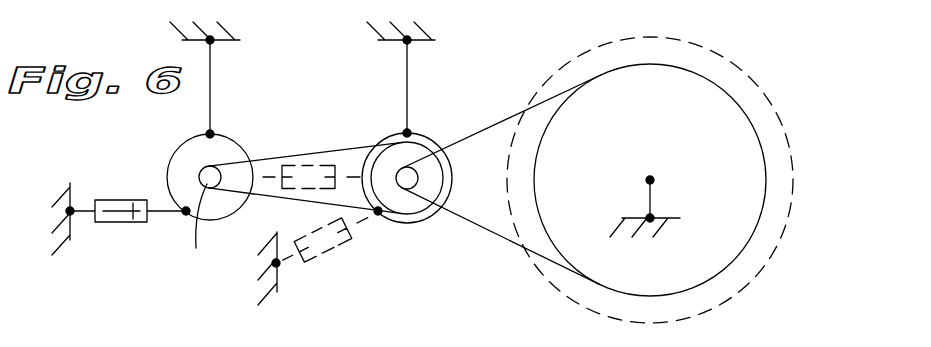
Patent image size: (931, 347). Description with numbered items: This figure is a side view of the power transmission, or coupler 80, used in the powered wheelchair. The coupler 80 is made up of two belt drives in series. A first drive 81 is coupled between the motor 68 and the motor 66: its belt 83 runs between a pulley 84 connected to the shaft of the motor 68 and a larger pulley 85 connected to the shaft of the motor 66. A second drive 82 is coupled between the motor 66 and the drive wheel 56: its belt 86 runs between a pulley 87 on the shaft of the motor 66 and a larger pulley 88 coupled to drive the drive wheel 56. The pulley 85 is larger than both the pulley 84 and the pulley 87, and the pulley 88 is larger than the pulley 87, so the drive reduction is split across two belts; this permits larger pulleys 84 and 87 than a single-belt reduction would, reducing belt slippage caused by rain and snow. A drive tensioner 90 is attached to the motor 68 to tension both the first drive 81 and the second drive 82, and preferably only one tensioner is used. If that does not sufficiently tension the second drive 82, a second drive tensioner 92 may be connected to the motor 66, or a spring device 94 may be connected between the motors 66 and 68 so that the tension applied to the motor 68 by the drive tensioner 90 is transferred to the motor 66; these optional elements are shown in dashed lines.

The drive wheel 56 is at (770, 112).
The motor 66 is at (428, 134).
The motor 68 is at (183, 157).
The coupler 80 is at (317, 78).
The first drive 81 is at (323, 151).
The second drive 82 is at (477, 129).
The belt 83 is at (282, 200).
The pulley 84 is at (208, 235).
The pulley 85 is at (432, 186).
The belt 86 is at (468, 222).
The pulley 87 is at (414, 190).
The pulley 88 is at (735, 229).
The drive tensioner 90 is at (125, 222).
The second drive tensioner 92 is at (330, 245).
The spring device 94 is at (307, 165).